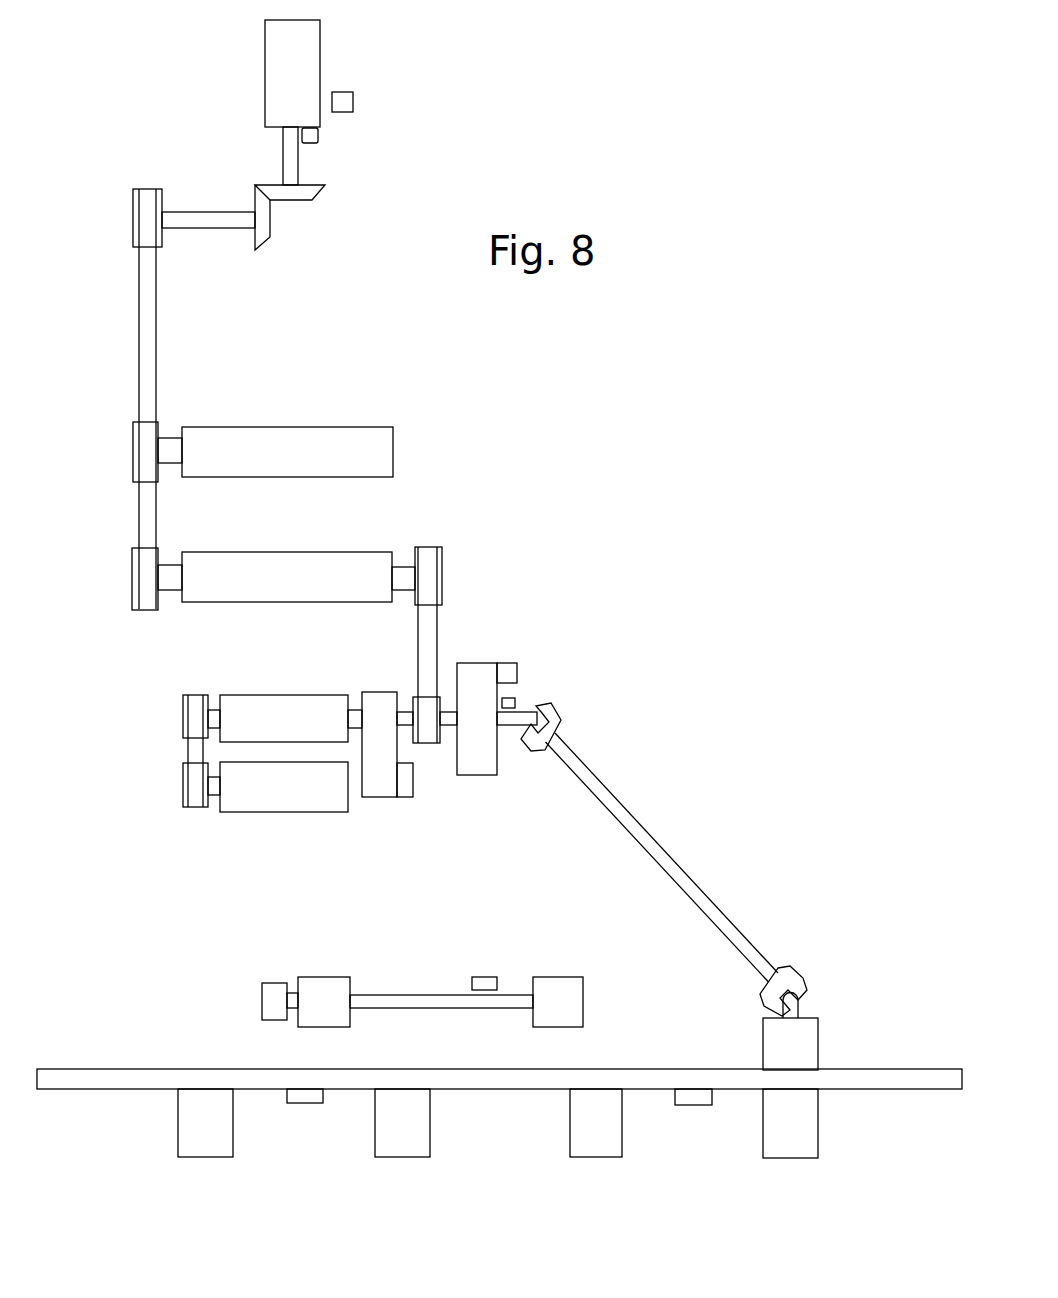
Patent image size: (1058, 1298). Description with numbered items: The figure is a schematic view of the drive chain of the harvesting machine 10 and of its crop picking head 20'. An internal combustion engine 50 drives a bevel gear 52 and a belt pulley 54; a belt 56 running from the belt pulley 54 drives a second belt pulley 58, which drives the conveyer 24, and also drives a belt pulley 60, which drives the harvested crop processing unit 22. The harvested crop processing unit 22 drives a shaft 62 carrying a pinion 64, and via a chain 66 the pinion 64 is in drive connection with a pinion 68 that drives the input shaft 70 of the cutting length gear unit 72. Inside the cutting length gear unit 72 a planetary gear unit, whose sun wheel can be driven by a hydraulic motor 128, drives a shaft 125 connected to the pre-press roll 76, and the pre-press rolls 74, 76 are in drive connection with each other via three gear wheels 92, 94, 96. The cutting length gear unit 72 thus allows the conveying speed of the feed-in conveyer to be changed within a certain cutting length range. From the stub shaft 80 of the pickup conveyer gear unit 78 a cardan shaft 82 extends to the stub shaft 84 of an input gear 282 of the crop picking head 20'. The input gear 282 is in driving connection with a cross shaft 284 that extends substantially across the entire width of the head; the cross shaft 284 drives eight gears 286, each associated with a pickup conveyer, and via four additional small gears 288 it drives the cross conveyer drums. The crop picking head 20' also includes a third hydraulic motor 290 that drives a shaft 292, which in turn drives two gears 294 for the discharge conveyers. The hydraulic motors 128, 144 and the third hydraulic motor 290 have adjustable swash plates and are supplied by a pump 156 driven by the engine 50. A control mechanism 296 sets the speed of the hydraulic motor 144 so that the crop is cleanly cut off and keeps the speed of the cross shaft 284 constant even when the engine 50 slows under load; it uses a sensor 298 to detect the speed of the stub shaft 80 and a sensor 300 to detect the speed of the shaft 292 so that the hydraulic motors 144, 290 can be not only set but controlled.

The harvesting machine 10 is at (530, 372).
The crop picking head 20' is at (122, 926).
The harvested crop processing unit 22 is at (247, 563).
The conveyer 24 is at (385, 448).
The internal combustion engine 50 is at (307, 84).
The bevel gear 52 is at (287, 223).
The belt pulley 54 is at (128, 213).
The belt 56 is at (147, 325).
The second belt pulley 58 is at (145, 448).
The belt pulley 60 is at (135, 560).
The shaft 62 is at (402, 572).
The pinion 64 is at (442, 570).
The chain 66 is at (427, 630).
The pinion 68 is at (443, 697).
The input shaft 70 is at (408, 717).
The cutting length gear unit 72 is at (377, 787).
The pre-press roll 74 is at (272, 798).
The pre-press roll 76 is at (230, 702).
The pickup conveyer gear unit 78 is at (475, 758).
The stub shaft 80 is at (507, 722).
The cardan shaft 82 is at (652, 853).
The stub shaft 84 is at (793, 1005).
The gear wheel 92 is at (183, 718).
The gear wheel 94 is at (195, 752).
The gear wheel 96 is at (183, 790).
The shaft 125 is at (357, 710).
The hydraulic motor 128 is at (408, 785).
The hydraulic motor 144 is at (505, 668).
The pump 156 is at (318, 135).
The input gear 282 is at (802, 1047).
The cross shaft 284 is at (507, 1080).
The gear 286 is at (190, 1123).
The small gear 288 is at (307, 1097).
The third hydraulic motor 290 is at (278, 988).
The shaft 292 is at (420, 998).
The gear 294 is at (325, 988).
The control mechanism 296 is at (353, 98).
The sensor 298 is at (515, 703).
The sensor 300 is at (485, 977).